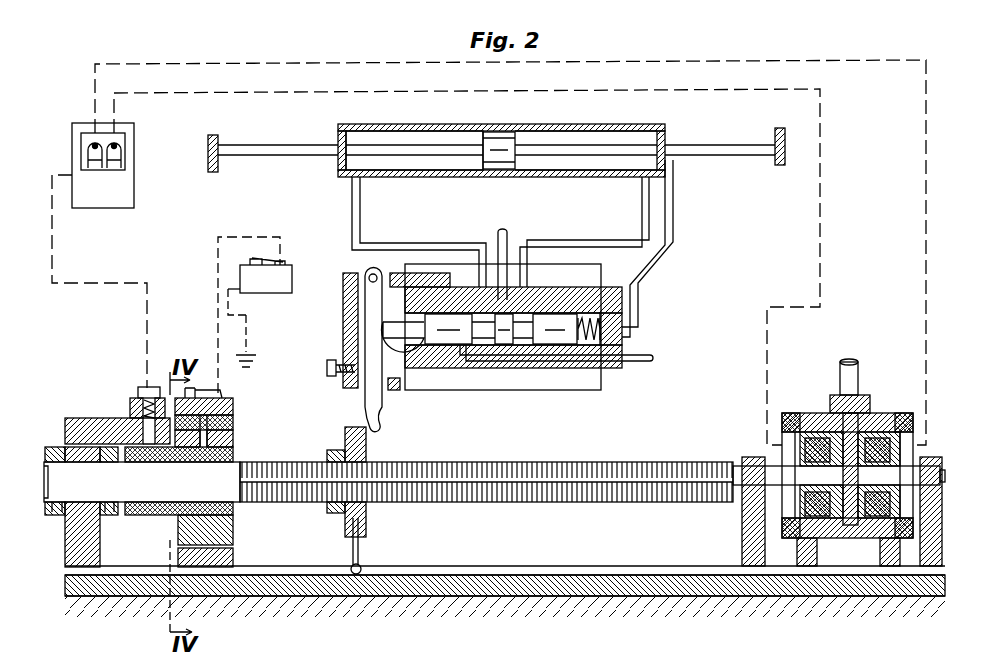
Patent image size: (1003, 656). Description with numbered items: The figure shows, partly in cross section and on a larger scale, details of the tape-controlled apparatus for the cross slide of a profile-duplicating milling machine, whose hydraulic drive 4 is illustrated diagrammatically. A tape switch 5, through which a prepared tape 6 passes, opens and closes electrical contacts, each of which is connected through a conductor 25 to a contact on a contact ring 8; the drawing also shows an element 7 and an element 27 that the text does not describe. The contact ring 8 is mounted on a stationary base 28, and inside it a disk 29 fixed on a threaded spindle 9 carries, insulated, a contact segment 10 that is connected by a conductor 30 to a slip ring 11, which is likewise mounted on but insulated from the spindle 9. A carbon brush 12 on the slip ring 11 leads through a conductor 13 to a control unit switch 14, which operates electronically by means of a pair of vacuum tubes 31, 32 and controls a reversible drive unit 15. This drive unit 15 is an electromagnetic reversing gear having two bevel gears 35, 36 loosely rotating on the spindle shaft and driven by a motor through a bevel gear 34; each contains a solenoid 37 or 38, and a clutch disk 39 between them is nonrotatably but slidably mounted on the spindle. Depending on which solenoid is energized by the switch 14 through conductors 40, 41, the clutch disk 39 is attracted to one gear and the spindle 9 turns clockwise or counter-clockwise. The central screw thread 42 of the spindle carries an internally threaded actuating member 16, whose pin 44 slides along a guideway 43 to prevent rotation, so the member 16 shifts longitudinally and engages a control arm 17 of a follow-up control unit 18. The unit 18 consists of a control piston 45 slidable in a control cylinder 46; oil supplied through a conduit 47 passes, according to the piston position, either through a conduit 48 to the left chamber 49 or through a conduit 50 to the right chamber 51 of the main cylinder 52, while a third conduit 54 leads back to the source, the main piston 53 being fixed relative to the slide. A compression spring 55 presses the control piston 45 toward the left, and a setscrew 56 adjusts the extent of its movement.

The hydraulic drive 4 is at (496, 135).
The tape switch 5 is at (272, 280).
The tape 6 is at (292, 274).
The ground connection 7 is at (246, 330).
The contact ring 8 is at (235, 402).
The threaded spindle 9 is at (607, 470).
The contact segment 10 is at (235, 420).
The slip ring 11 is at (152, 516).
The carbon brush 12 is at (140, 390).
The conductor 13 is at (100, 283).
The control unit switch 14 is at (122, 193).
The reversible drive unit 15 is at (839, 438).
The actuating member 16 is at (345, 436).
The control arm 17 is at (381, 410).
The follow-up control unit 18 is at (600, 380).
The conductor 25 is at (218, 308).
The contact lever 27 is at (215, 393).
The stationary base 28 is at (618, 584).
The disk 29 is at (234, 545).
The conductor 30 is at (215, 440).
The vacuum tube 31 is at (90, 153).
The vacuum tube 32 is at (115, 155).
The bevel gear 34 is at (862, 406).
The bevel gear 35 is at (825, 416).
The bevel gear 36 is at (893, 425).
The solenoid 37 is at (810, 500).
The solenoid 38 is at (890, 505).
The clutch disk 39 is at (875, 530).
The conductor 40 is at (114, 108).
The conductor 41 is at (95, 90).
The screw thread 42 is at (515, 465).
The guideway 43 is at (565, 568).
The pin 44 is at (360, 553).
The control piston 45 is at (450, 340).
The control cylinder 46 is at (592, 298).
The conduit 47 is at (652, 358).
The conduit 48 is at (483, 246).
The left chamber 49 is at (448, 136).
The conduit 50 is at (578, 243).
The right chamber 51 is at (640, 136).
The main cylinder 52 is at (610, 117).
The main piston 53 is at (500, 140).
The third conduit 54 is at (508, 235).
The compression spring 55 is at (598, 326).
The setscrew 56 is at (331, 378).